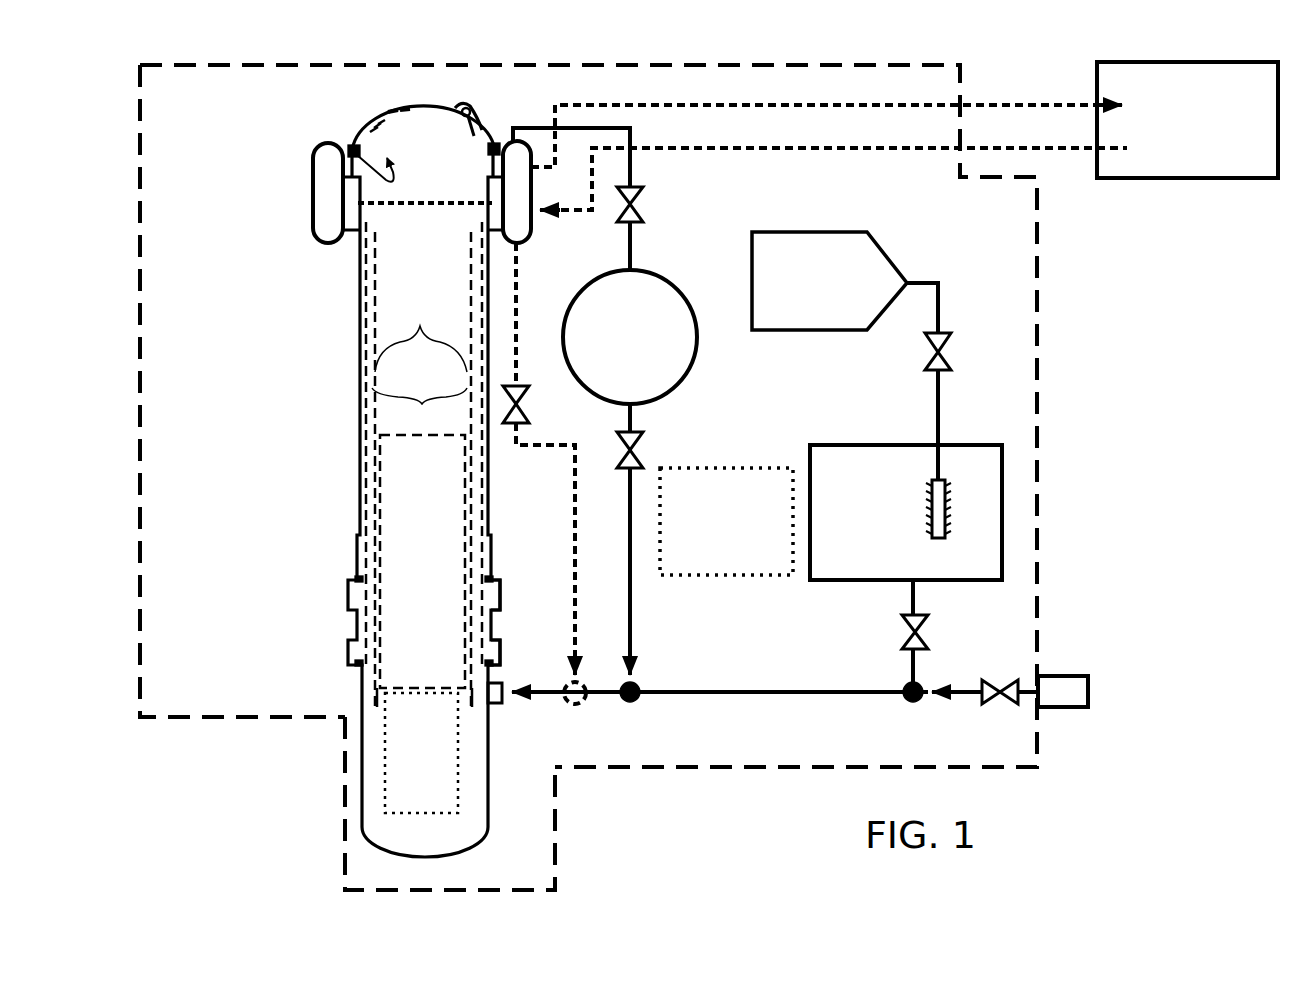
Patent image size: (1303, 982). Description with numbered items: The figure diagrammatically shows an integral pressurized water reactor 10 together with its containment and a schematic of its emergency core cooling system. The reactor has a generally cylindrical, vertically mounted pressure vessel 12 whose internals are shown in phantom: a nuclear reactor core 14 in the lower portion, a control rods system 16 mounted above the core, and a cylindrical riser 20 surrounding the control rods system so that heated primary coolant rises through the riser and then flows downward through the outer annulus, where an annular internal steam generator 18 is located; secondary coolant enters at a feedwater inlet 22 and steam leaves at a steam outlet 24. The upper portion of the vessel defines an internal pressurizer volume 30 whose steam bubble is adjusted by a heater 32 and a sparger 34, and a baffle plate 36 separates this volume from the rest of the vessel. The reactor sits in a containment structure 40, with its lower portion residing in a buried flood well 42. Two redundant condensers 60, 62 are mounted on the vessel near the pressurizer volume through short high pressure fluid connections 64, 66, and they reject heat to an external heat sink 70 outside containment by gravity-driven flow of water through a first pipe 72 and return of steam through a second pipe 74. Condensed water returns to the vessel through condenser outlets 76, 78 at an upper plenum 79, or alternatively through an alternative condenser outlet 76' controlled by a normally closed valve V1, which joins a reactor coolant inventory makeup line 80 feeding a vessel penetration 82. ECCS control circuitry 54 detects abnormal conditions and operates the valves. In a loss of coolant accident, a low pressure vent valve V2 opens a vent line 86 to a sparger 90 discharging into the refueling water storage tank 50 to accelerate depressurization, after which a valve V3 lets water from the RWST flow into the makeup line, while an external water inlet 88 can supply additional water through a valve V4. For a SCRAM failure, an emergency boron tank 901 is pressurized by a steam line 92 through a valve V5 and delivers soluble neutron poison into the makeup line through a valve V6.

The pressurized water reactor 10 is at (340, 496).
The pressure vessel 12 is at (360, 440).
The nuclear reactor core 14 is at (421, 753).
The control rods system 16 is at (424, 571).
The internal steam generator 18 is at (419, 411).
The cylindrical riser 20 is at (421, 340).
The feedwater inlet 22 is at (503, 656).
The steam outlet 24 is at (503, 592).
The internal pressurizer volume 30 is at (423, 145).
The heater 32 is at (357, 148).
The sparger 34 is at (455, 138).
The baffle plate 36 is at (400, 215).
The containment structure 40 is at (1040, 322).
The flood well 42 is at (343, 832).
The water storage tank 50 is at (828, 445).
The ECCS control circuitry 54 is at (700, 466).
The condenser 60 is at (531, 230).
The condenser 62 is at (318, 215).
The high pressure fluid connection 64 is at (493, 150).
The high pressure fluid connection 66 is at (335, 150).
The external heat sink 70 is at (1135, 178).
The first pipe 72 is at (970, 150).
The second pipe 74 is at (1058, 105).
The condenser outlet 76 is at (545, 455).
The alternative condenser outlet 76' is at (552, 591).
The condenser outlet 78 is at (352, 238).
The upper plenum 79 is at (362, 278).
The reactor coolant inventory makeup line 80 is at (770, 690).
The vessel penetration 82 is at (495, 703).
The vent line 86 is at (810, 232).
The external water inlet 88 is at (1055, 680).
The sparger 90 is at (925, 512).
The steam line 92 is at (640, 165).
The emergency boron tank 901 is at (680, 305).
The valve V1 is at (535, 404).
The low pressure vent valve V2 is at (956, 351).
The valve V3 is at (932, 632).
The valve V4 is at (1000, 678).
The valve V5 is at (647, 204).
The valve V6 is at (648, 450).